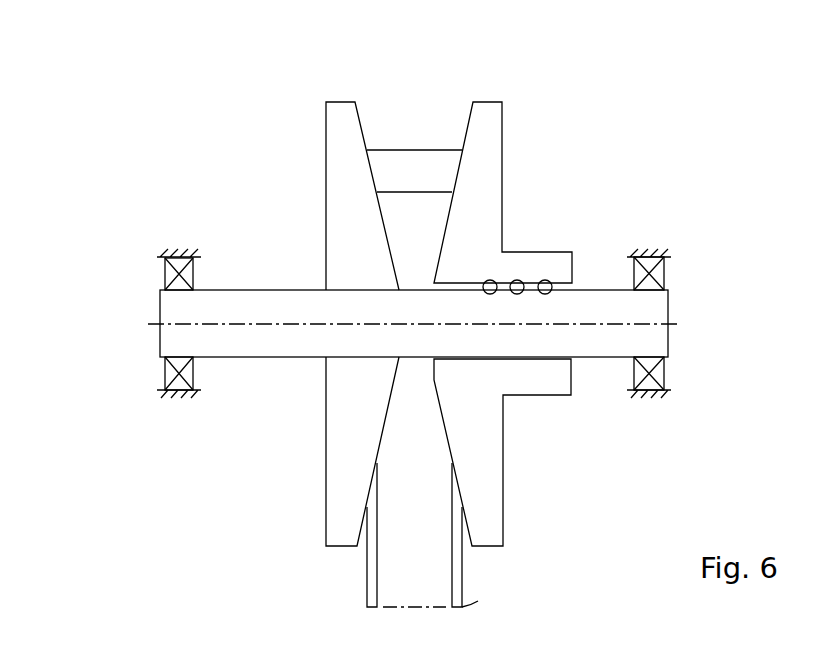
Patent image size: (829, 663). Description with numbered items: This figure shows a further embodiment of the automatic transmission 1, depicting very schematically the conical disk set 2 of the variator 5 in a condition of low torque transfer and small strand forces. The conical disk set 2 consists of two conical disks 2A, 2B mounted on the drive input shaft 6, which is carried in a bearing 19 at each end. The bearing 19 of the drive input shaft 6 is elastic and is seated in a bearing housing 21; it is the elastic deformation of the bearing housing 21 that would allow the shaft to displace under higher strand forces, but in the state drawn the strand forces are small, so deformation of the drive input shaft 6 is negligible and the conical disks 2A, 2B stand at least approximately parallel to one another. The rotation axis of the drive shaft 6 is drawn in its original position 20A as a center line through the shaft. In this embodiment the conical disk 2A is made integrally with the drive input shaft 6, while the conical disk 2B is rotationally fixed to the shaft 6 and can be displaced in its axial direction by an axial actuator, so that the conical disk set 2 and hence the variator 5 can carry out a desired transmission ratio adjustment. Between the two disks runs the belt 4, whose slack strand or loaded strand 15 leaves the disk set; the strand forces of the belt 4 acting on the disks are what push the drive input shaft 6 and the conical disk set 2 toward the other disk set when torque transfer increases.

The automatic transmission 1 is at (108, 62).
The conical disk set 2 is at (366, 295).
The conical disk 2A is at (339, 127).
The conical disk 2B is at (485, 120).
The belt 4 is at (413, 172).
The variator 5 is at (622, 147).
The drive input shaft 6 is at (166, 303).
The loaded strand 15 is at (377, 604).
The bearing 19 is at (180, 245).
The rotation axis 20A is at (152, 328).
The bearing housing 21 is at (667, 253).